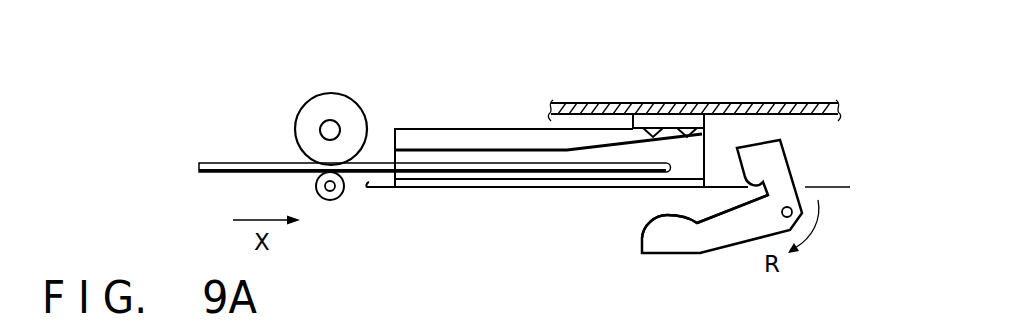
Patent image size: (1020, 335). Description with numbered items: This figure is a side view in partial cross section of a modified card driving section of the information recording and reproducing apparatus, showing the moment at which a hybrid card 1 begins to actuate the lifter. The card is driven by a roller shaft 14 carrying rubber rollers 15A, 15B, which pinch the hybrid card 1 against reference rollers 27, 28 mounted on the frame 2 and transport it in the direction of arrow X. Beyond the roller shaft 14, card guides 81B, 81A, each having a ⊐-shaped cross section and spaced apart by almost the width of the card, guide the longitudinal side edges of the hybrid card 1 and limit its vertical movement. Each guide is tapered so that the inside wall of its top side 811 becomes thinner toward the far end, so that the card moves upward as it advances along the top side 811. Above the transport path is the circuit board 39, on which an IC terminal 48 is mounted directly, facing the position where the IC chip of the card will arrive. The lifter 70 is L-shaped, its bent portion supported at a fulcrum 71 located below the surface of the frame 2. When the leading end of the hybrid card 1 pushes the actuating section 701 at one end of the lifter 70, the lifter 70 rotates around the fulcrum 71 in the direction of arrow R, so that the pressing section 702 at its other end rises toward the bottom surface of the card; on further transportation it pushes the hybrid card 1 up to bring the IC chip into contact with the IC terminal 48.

The hybrid card 1 is at (205, 173).
The roller shaft 14 is at (324, 120).
The rubber roller 15A is at (361, 88).
The rubber roller 15B is at (348, 103).
The reference roller 27 is at (361, 215).
The reference roller 28 is at (333, 200).
The card guide 81B is at (557, 123).
The card guide 81A is at (481, 140).
The top side 811 is at (572, 142).
The IC terminal 48 is at (680, 120).
The circuit board 39 is at (797, 103).
The lifter 70 is at (705, 240).
The actuating section 701 is at (744, 184).
The pressing section 702 is at (661, 228).
The fulcrum 71 is at (792, 212).
The frame 2 is at (847, 207).